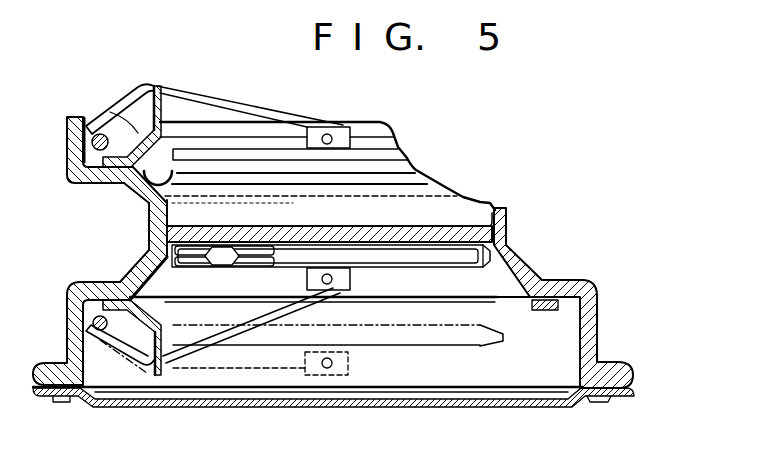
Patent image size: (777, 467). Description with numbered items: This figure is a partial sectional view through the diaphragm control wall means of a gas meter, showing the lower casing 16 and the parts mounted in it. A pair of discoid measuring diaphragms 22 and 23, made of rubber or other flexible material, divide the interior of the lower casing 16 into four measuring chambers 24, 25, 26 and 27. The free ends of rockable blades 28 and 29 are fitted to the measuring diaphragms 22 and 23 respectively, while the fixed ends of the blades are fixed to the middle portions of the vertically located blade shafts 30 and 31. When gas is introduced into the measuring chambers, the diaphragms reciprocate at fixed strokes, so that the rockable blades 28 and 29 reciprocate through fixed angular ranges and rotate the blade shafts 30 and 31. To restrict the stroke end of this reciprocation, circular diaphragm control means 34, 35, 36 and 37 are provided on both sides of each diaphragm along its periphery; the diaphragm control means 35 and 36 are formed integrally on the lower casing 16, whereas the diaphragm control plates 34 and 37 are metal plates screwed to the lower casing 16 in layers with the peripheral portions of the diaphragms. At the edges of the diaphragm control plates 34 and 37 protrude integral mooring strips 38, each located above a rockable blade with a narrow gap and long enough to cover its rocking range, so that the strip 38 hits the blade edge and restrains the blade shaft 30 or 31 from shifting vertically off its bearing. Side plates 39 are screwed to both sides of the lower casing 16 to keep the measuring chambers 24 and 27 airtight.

The lower casing 16 is at (153, 237).
The measuring diaphragm 22 is at (344, 310).
The measuring diaphragm 23 is at (176, 178).
The measuring chamber 24 is at (574, 324).
The measuring chamber 25 is at (505, 246).
The measuring chamber 26 is at (466, 203).
The measuring chamber 27 is at (139, 106).
The rockable blade 28 is at (230, 322).
The rockable blade 29 is at (222, 102).
The blade shaft 30 is at (93, 323).
The blade shaft 31 is at (91, 143).
The diaphragm control plate 34 is at (146, 312).
The diaphragm control means 35 is at (136, 276).
The diaphragm control means 36 is at (134, 186).
The diaphragm control plate 37 is at (113, 111).
The mooring strip 38 is at (162, 98).
The side plate 39 is at (533, 404).